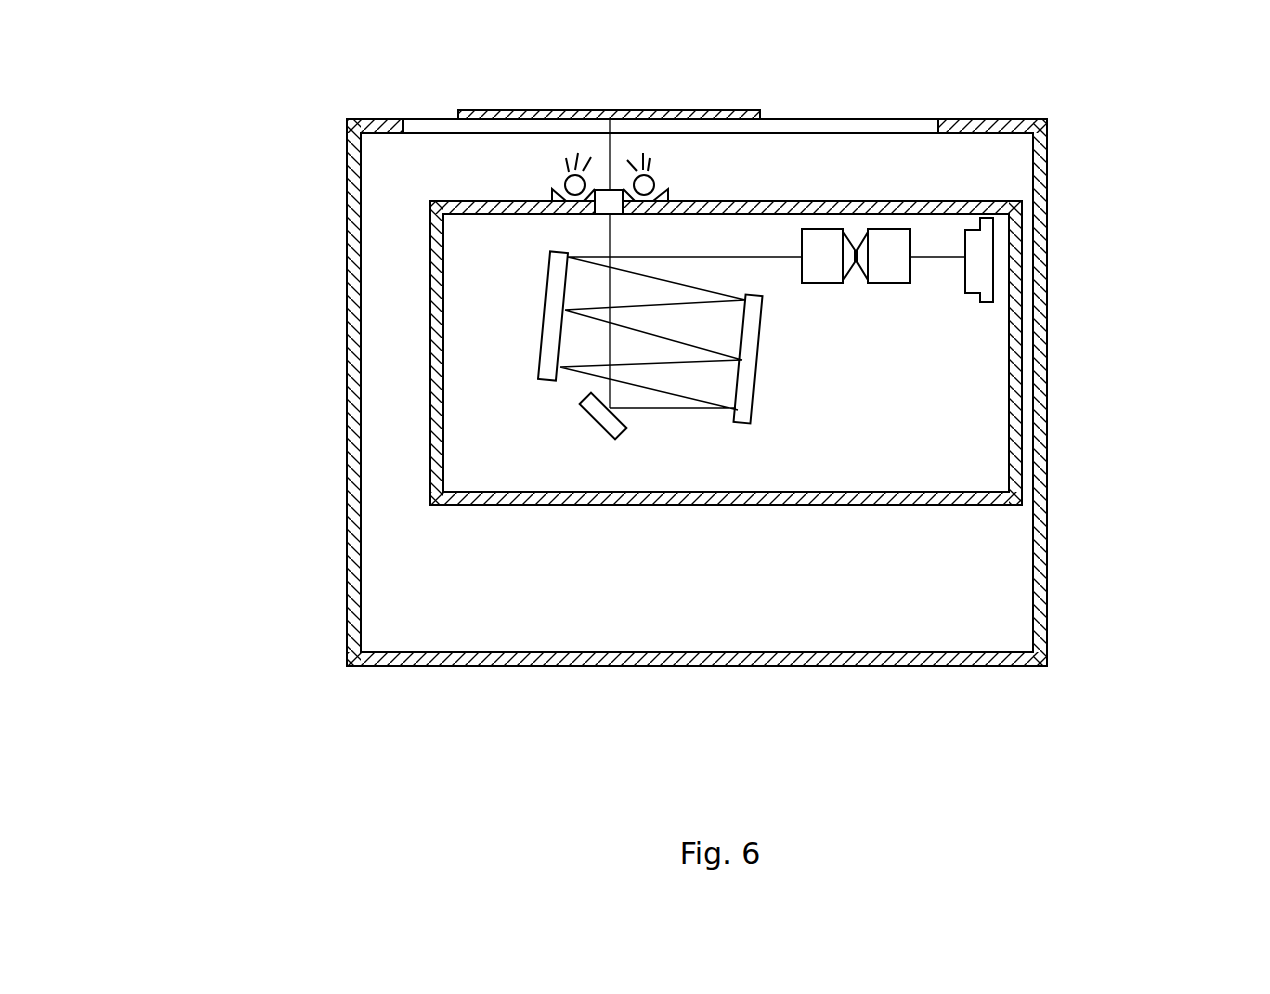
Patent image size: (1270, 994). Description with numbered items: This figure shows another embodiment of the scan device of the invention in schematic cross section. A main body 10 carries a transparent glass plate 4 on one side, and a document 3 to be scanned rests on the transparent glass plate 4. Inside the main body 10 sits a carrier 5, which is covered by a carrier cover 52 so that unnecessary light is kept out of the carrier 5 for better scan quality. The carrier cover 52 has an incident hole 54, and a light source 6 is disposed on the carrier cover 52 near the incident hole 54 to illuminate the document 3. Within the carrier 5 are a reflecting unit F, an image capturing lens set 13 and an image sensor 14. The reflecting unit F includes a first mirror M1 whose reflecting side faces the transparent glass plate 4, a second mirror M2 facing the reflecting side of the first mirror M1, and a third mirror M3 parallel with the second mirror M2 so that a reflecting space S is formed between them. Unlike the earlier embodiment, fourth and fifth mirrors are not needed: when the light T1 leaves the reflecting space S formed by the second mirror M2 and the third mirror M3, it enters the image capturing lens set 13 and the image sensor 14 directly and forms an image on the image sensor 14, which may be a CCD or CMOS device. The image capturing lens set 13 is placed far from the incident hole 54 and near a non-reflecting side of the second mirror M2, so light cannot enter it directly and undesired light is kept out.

The main body 10 is at (348, 170).
The document 3 is at (727, 113).
The transparent glass plate 4 is at (887, 127).
The light T1 is at (570, 110).
The carrier 5 is at (1012, 473).
The carrier cover 52 is at (503, 205).
The incident hole 54 is at (600, 217).
The light source 6 is at (645, 176).
The reflecting space S is at (757, 375).
The reflecting unit F is at (612, 520).
The first mirror M1 is at (578, 405).
The second mirror M2 is at (710, 323).
The third mirror M3 is at (545, 318).
The image capturing lens set 13 is at (893, 265).
The image sensor 14 is at (978, 258).